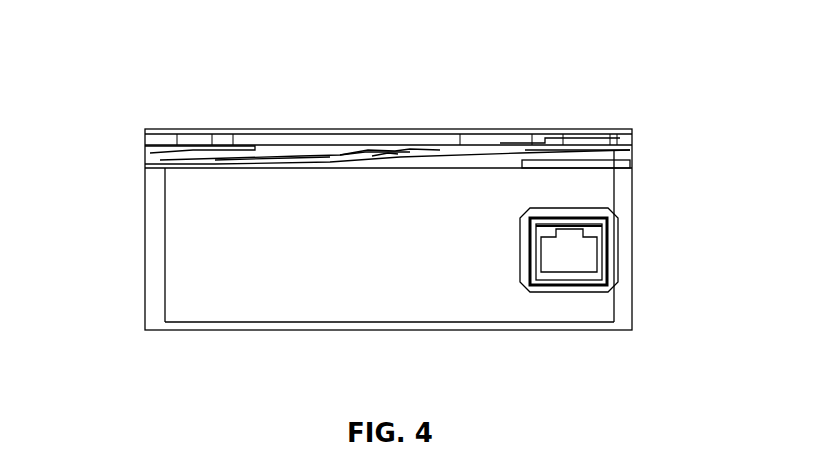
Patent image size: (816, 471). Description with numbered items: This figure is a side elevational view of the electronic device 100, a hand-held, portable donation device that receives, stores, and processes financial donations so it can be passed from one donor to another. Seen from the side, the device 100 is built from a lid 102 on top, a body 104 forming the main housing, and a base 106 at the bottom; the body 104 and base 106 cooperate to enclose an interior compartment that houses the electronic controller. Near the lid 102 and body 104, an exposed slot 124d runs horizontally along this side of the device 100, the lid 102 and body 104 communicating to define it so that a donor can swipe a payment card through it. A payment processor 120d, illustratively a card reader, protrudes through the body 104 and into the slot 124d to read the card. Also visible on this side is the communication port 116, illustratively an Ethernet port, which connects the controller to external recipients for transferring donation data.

The electronic device 100 is at (596, 84).
The lid 102 is at (147, 130).
The body 104 is at (150, 228).
The base 106 is at (150, 318).
The communication port 116 is at (616, 254).
The payment processor 120d is at (383, 153).
The exposed slot 124d is at (344, 162).